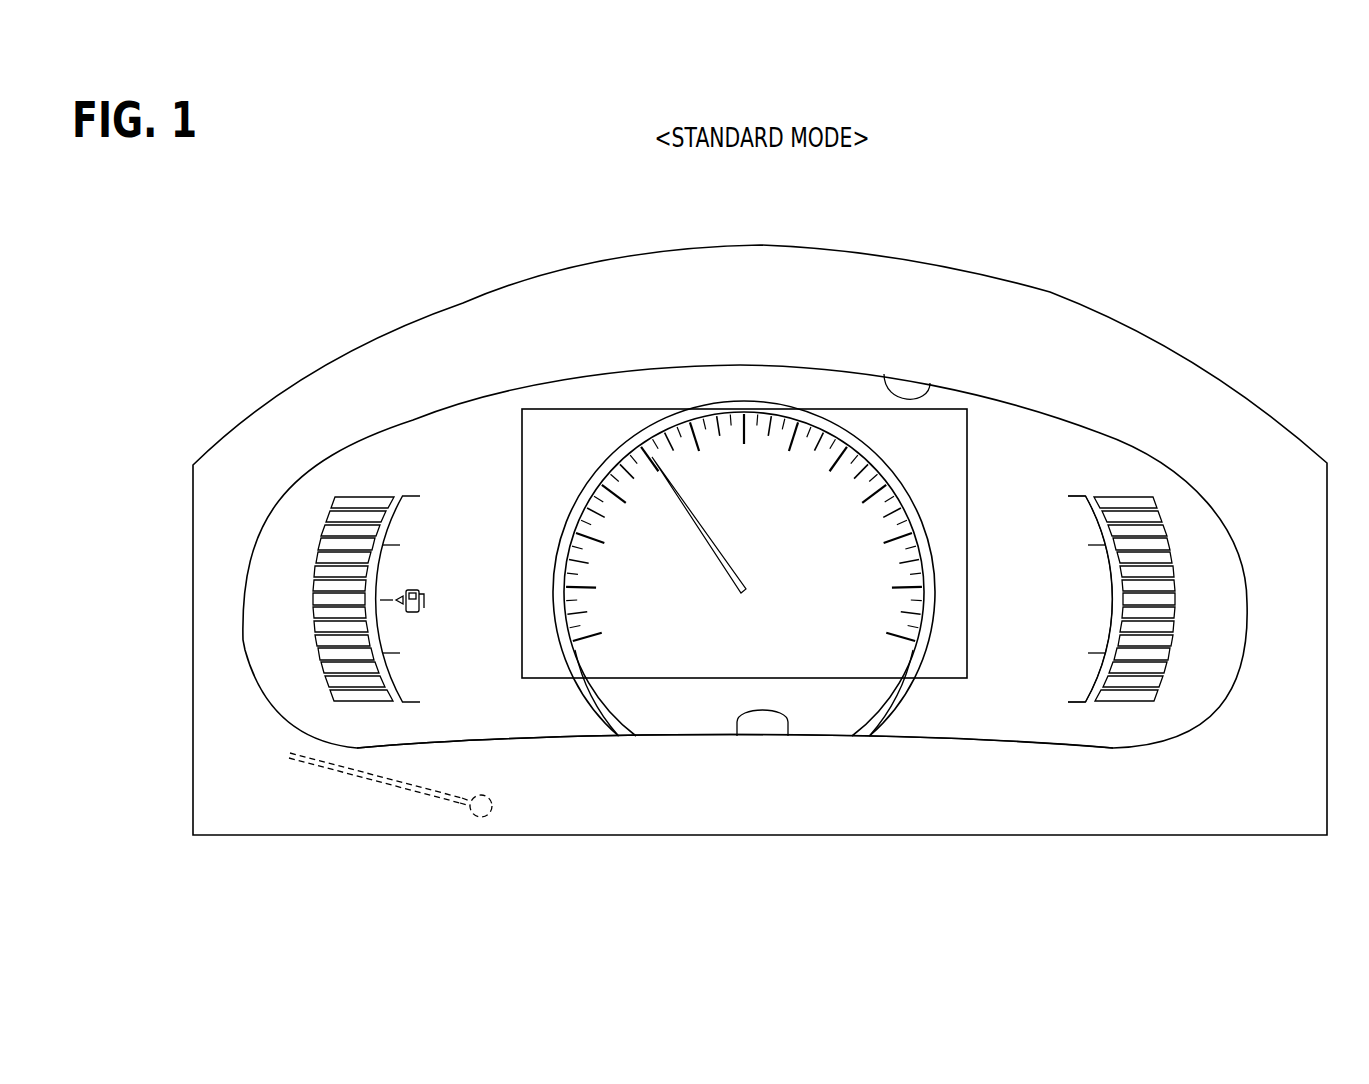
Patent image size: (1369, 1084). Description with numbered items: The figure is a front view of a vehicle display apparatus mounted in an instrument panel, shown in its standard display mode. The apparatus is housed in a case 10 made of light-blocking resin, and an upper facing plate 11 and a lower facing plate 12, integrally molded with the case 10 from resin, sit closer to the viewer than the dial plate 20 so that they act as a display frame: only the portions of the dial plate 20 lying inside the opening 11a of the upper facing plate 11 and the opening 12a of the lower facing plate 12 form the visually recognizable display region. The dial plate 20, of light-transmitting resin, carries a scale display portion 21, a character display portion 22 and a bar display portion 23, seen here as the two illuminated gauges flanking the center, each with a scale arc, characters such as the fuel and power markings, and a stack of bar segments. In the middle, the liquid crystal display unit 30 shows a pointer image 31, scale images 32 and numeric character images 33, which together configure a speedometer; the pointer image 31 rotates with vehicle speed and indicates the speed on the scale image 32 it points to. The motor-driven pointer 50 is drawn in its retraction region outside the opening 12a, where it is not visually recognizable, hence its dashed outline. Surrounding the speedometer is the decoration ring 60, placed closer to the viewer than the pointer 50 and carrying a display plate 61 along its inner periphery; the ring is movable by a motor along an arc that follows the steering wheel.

The case 10 is at (1213, 376).
The upper facing plate 11 is at (961, 365).
The opening 11a is at (930, 380).
The lower facing plate 12 is at (712, 737).
The opening 12a is at (783, 737).
The dial plate 20 is at (1205, 693).
The scale display portion 21 is at (413, 703).
The character display portion 22 is at (437, 710).
The bar display portion 23 is at (360, 683).
The liquid crystal display unit 30 is at (560, 425).
The pointer image 31 is at (698, 520).
The scale image 32 is at (898, 640).
The numeric character image 33 is at (852, 640).
The pointer 50 is at (377, 780).
The decoration ring 60 is at (760, 403).
The display plate 61 is at (652, 697).